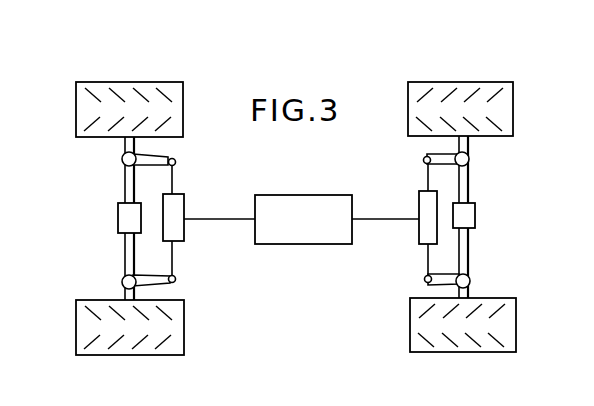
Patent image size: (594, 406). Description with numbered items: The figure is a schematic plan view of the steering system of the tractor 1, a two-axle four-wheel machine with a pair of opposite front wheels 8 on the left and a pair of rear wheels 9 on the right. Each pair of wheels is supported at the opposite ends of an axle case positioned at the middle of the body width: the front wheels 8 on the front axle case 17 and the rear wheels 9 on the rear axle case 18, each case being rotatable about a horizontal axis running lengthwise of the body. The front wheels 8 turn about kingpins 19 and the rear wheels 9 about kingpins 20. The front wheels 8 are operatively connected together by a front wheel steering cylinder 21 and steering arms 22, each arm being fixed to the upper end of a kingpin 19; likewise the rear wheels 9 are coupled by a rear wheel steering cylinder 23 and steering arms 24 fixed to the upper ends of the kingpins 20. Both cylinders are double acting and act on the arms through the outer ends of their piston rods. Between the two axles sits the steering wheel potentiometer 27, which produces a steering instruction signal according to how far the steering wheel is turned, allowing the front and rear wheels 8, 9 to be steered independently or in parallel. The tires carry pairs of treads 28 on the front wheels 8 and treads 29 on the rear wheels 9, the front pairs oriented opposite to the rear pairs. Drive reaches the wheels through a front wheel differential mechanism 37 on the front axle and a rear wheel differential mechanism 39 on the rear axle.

The tractor 1 is at (98, 200).
The front wheels 8 is at (183, 88).
The rear wheels 9 is at (514, 110).
The front axle case 17 is at (124, 252).
The rear axle case 18 is at (469, 248).
The kingpins 19 is at (123, 158).
The kingpins 20 is at (469, 158).
The front wheel steering cylinder 21 is at (177, 209).
The steering arms 22 is at (176, 157).
The rear wheel steering cylinder 23 is at (426, 228).
The steering arms 24 is at (440, 157).
The steering wheel potentiometer 27 is at (318, 233).
The treads 28 is at (117, 95).
The treads 29 is at (452, 96).
The front wheel differential mechanism 37 is at (124, 220).
The rear wheel differential mechanism 39 is at (476, 211).